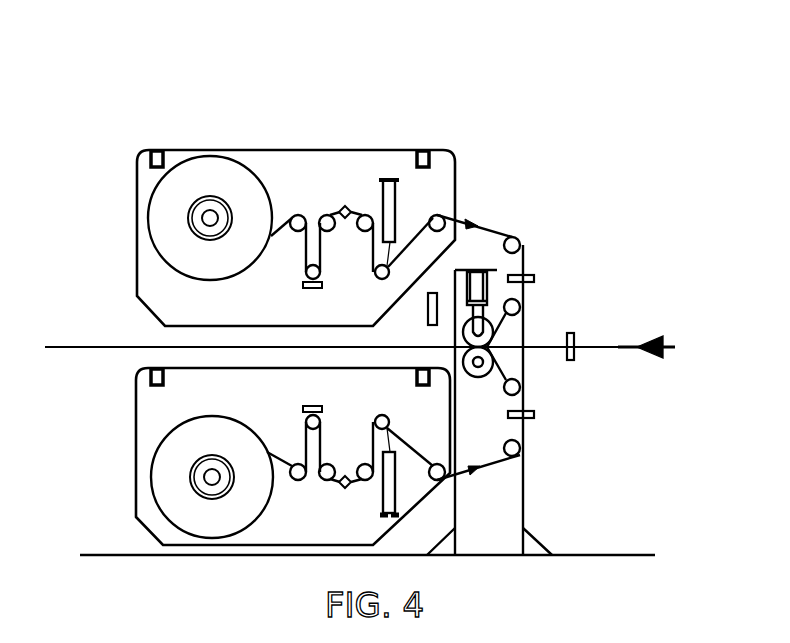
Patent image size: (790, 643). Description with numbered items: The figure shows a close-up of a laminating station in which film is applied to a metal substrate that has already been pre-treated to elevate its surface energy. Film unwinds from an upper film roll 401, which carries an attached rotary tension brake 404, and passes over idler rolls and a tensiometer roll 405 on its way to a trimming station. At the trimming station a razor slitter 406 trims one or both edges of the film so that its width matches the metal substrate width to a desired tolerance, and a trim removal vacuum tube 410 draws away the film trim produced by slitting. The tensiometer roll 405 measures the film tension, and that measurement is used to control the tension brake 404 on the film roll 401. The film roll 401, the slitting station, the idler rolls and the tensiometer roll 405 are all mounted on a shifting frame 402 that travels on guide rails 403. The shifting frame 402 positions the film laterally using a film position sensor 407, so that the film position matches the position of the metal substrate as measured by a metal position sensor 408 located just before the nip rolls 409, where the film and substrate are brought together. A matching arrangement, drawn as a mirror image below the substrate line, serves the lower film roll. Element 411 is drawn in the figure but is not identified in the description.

The upper film roll 401 is at (196, 158).
The shifting frame 402 is at (135, 242).
The guide rails 403 is at (152, 148).
The rotary tension brake 404 is at (182, 218).
The tensiometer roll 405 is at (293, 288).
The razor slitter 406 is at (345, 205).
The film position sensor 407 is at (535, 272).
The metal position sensor 408 is at (572, 362).
The nip rolls 409 is at (493, 334).
The trim removal vacuum tube 410 is at (403, 201).
The guide plate 411 is at (433, 290).